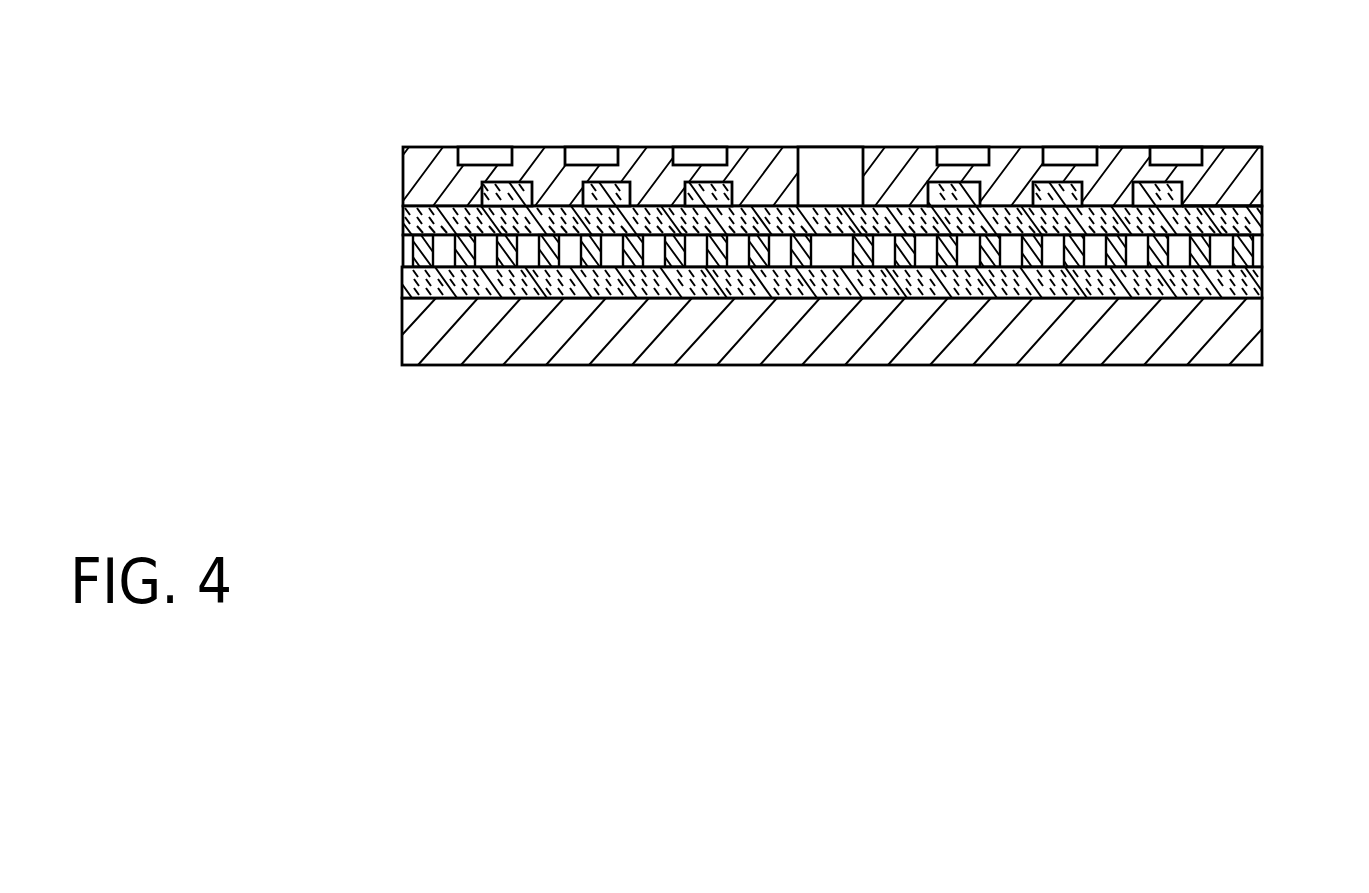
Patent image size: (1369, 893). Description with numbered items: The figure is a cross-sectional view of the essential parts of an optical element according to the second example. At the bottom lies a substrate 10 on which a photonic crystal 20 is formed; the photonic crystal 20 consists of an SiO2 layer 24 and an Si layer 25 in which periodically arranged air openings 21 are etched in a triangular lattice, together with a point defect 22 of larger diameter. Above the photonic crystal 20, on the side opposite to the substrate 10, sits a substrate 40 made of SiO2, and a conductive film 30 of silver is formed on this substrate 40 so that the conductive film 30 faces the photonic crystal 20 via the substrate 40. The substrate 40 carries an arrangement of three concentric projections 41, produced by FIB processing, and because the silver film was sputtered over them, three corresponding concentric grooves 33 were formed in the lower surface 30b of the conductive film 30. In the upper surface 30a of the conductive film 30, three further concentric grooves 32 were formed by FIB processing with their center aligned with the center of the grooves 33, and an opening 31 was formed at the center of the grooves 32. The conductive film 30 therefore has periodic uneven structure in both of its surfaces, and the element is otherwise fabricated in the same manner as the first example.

The substrate 10 is at (402, 318).
The photonic crystal 20 is at (287, 233).
The air openings 21 is at (780, 253).
The point defect 22 is at (830, 253).
The SiO2 layer 24 is at (402, 288).
The Si layer 25 is at (402, 252).
The conductive film 30 is at (402, 180).
The upper surface 30a is at (1238, 148).
The lower surface 30b is at (1243, 212).
The opening 31 is at (830, 173).
The concentric grooves 32 is at (703, 157).
The concentric grooves 33 is at (1153, 187).
The substrate 40 is at (402, 217).
The concentric projections 41 is at (657, 197).